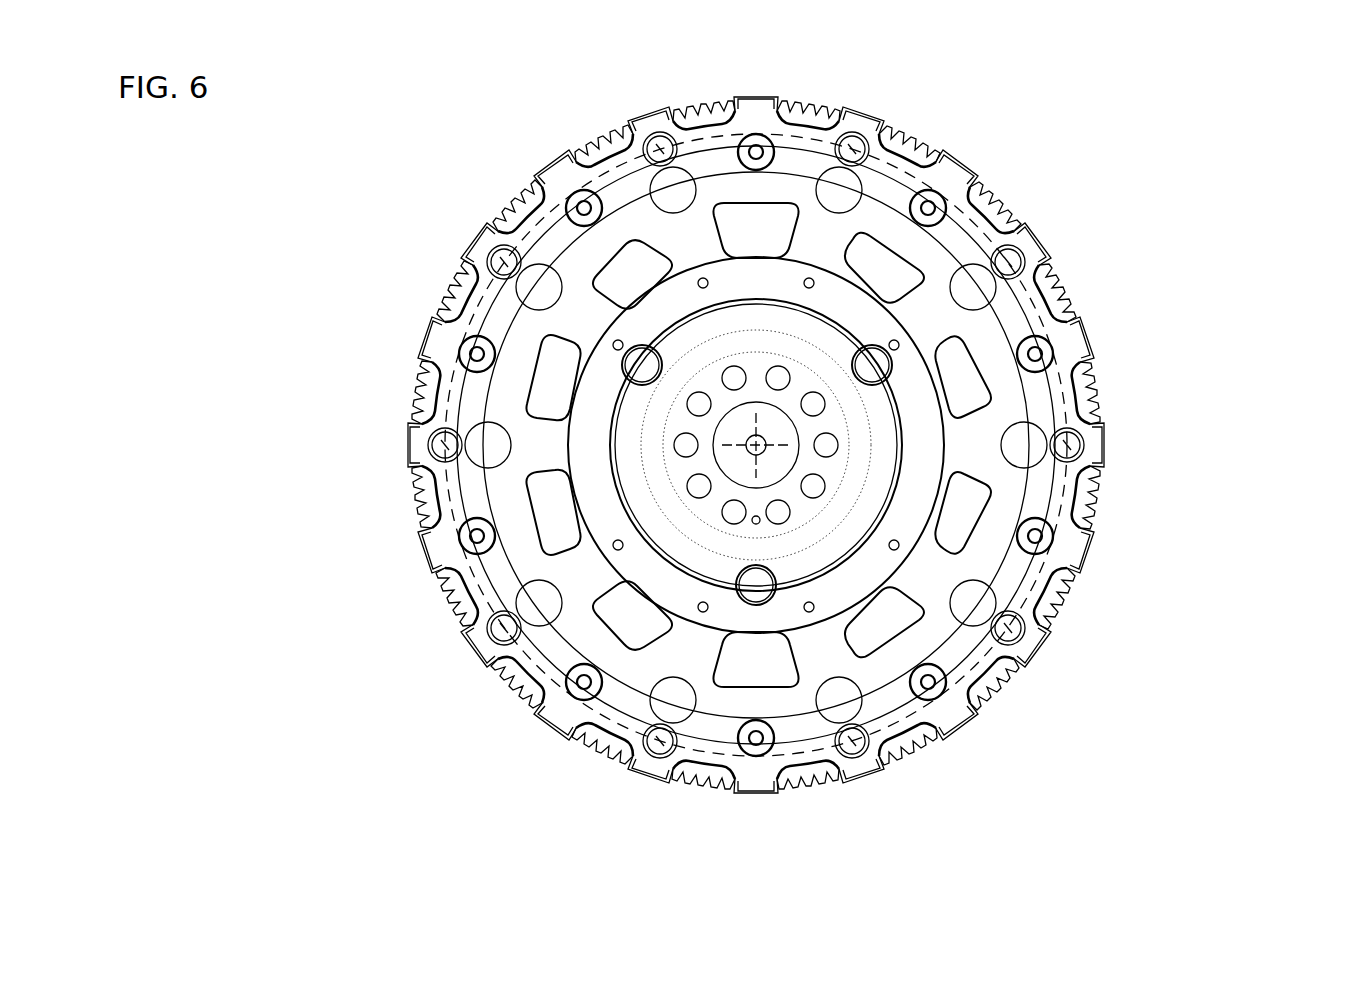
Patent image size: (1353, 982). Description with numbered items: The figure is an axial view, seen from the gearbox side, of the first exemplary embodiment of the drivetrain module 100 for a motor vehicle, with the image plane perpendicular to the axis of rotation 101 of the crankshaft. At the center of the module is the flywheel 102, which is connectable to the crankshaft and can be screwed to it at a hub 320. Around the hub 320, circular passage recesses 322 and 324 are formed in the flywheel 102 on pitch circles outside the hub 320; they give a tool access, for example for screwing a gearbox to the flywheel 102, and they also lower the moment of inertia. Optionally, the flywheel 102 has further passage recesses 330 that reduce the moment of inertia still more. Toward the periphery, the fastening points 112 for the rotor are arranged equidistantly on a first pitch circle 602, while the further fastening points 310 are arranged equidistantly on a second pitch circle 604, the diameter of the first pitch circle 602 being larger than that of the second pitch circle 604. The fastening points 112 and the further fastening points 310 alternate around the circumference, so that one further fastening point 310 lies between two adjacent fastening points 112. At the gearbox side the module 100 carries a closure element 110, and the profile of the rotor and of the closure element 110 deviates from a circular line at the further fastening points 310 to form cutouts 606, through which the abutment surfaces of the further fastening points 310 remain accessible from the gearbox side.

The drivetrain module 100 is at (160, 165).
The axis of rotation 101 is at (777, 448).
The flywheel 102 is at (987, 568).
The closure element 110 is at (1010, 240).
The fastening points 112 is at (905, 143).
The further fastening points 310 is at (582, 208).
The hub 320 is at (713, 445).
The circular passage recesses 322 is at (642, 365).
The circular passage recesses 324 is at (482, 443).
The further passage recesses 330 is at (745, 665).
The first pitch circle 602 is at (1067, 502).
The second pitch circle 604 is at (1072, 396).
The cutouts 606 is at (950, 683).